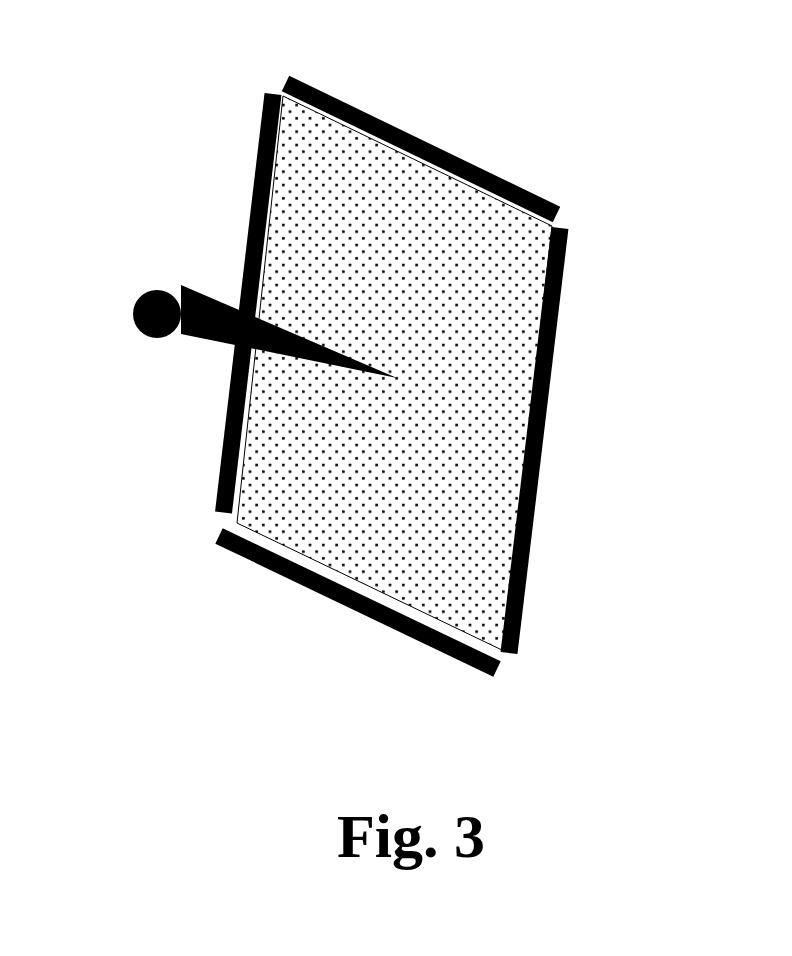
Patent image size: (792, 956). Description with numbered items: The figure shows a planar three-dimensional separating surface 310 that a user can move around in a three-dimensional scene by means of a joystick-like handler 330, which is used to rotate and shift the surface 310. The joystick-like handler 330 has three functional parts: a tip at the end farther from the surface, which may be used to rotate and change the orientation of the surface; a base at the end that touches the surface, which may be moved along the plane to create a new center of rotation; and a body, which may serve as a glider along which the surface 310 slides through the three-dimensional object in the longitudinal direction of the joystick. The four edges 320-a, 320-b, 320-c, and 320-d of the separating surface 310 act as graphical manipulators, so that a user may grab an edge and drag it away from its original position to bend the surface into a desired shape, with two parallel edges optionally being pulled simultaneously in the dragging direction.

The 3D separating surface 310 is at (497, 255).
The edge 320-a is at (430, 140).
The edge 320-b is at (535, 490).
The edge 320-c is at (280, 568).
The edge 320-d is at (253, 157).
The 3D joystick-like handler 330 is at (137, 307).